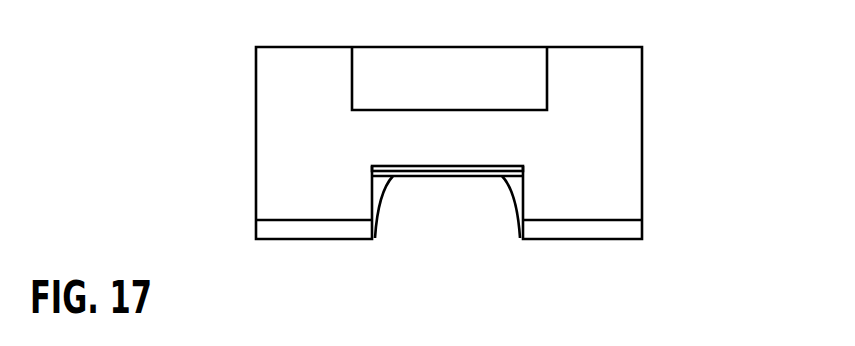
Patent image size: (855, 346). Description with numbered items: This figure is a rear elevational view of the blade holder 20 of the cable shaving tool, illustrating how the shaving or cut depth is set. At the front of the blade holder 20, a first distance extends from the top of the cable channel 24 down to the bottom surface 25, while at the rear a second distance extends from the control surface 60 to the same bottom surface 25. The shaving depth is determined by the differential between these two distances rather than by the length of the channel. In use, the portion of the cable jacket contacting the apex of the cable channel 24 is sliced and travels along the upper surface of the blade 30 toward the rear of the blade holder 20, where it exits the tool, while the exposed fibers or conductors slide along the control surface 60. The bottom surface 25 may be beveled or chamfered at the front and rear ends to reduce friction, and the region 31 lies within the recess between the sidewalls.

The blade holder 20 is at (611, 92).
The bottom surface 25 is at (312, 241).
The blade 30 is at (515, 166).
The control surface 60 is at (392, 166).
The cable channel 24 is at (383, 192).
The recess / cavity region 31 is at (467, 177).